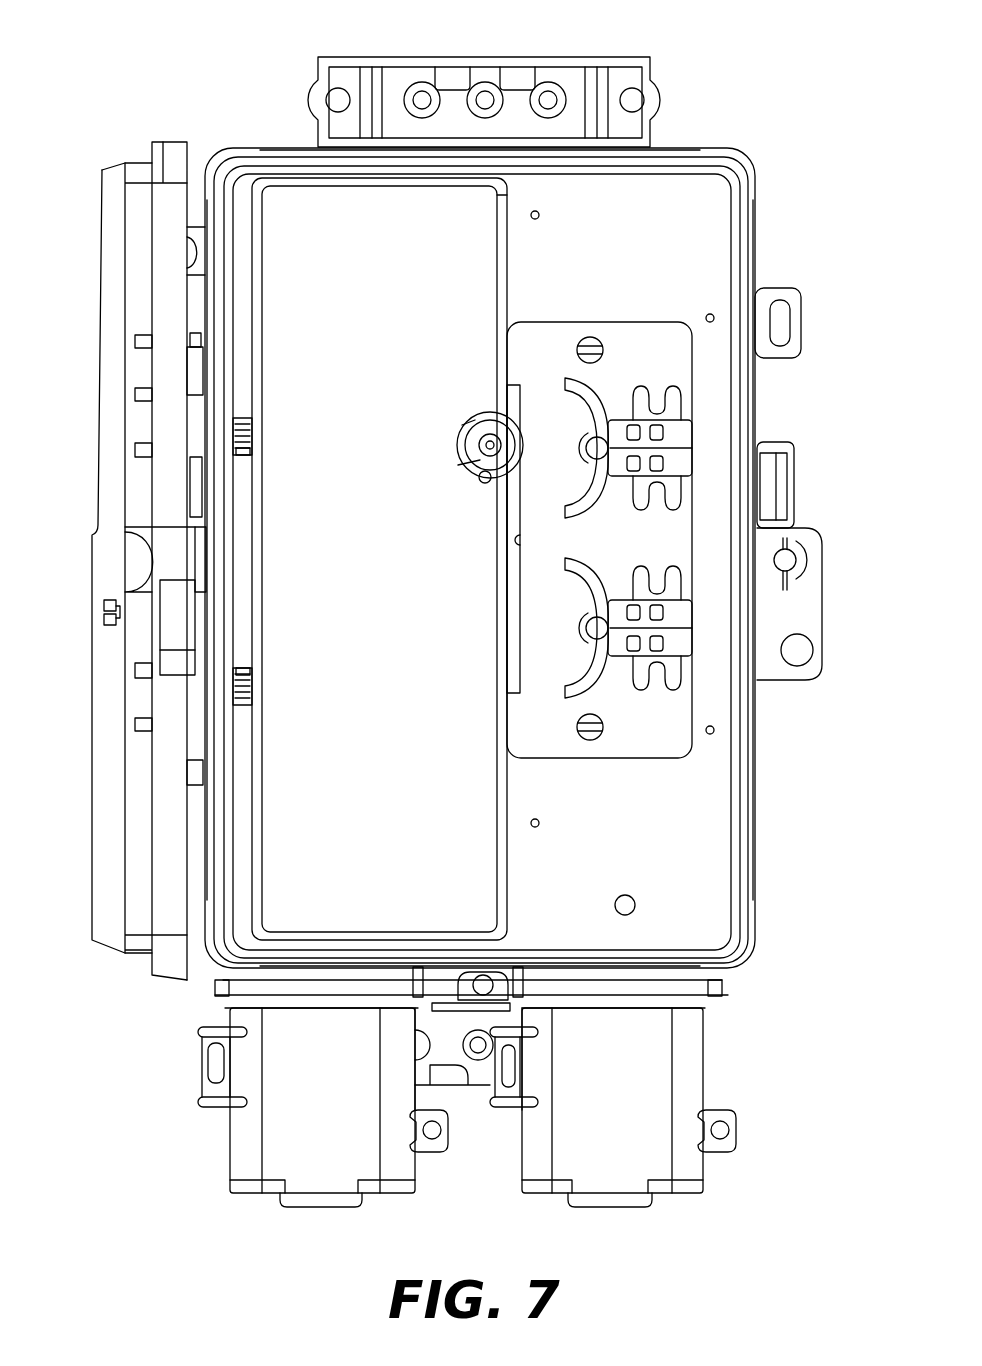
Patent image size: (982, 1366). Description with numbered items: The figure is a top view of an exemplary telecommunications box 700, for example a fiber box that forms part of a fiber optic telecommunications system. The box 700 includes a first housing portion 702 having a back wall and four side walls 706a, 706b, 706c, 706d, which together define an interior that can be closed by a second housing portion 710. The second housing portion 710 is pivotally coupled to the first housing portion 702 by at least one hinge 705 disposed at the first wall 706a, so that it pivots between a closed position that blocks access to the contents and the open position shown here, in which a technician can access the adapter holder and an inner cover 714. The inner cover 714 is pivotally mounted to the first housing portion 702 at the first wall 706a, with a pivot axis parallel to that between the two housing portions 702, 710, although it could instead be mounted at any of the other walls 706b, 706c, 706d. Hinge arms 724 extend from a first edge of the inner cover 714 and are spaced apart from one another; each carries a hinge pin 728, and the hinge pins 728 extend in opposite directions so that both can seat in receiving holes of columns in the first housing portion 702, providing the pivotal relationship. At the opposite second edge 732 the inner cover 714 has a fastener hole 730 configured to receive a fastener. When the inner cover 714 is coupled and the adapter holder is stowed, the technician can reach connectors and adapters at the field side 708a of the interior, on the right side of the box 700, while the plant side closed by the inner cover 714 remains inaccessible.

The telecommunications box 700 is at (136, 64).
The first housing portion 702 is at (757, 395).
The hinge 705 is at (195, 330).
The first wall 706a is at (214, 960).
The side wall 706b is at (727, 980).
The side wall 706c is at (757, 740).
The side wall 706d is at (697, 147).
The field side 708a is at (702, 867).
The second housing portion 710 is at (90, 720).
The inner cover 714 is at (376, 560).
The hinge arms 724 is at (252, 452).
The hinge pin 728 is at (252, 423).
The fastener hole 730 is at (475, 468).
The second edge 732 is at (507, 226).